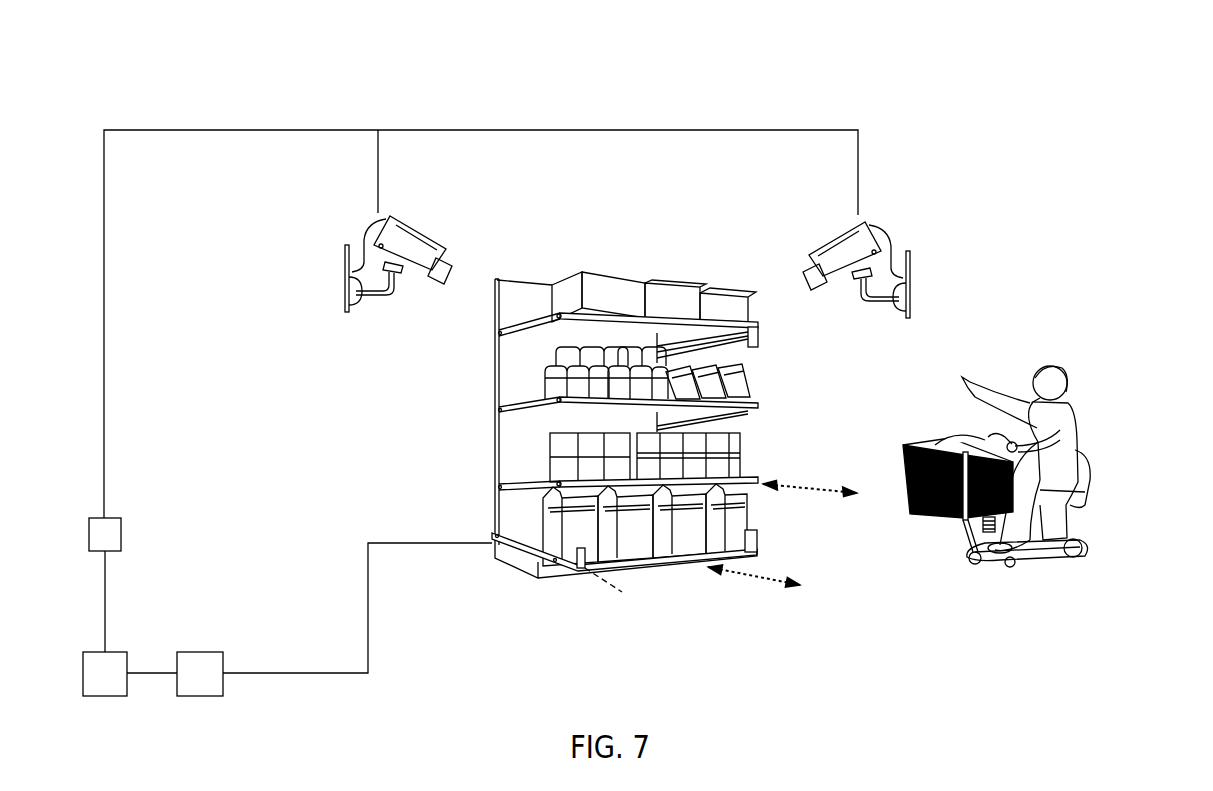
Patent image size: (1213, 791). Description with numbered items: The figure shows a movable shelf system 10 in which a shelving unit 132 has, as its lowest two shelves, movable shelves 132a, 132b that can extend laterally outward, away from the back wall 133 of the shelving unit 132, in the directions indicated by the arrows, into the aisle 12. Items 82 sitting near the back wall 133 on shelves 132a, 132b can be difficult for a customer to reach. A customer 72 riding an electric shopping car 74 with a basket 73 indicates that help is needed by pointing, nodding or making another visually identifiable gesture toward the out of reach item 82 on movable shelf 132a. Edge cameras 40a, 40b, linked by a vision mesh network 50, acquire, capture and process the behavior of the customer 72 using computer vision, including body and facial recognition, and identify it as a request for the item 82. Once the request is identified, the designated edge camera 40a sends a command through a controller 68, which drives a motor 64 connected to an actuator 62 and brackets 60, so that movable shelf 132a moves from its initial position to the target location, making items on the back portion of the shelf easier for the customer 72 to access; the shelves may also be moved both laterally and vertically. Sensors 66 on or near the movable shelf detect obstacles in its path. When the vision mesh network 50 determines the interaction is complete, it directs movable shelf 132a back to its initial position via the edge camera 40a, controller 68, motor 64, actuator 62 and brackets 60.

The movable shelf system 10 is at (828, 80).
The mesh network 50 is at (509, 130).
The edge camera 40a is at (407, 218).
The edge camera 40b is at (863, 232).
The controller 68 is at (113, 518).
The motor 64 is at (108, 696).
The actuator 62 is at (203, 696).
The shelving unit 132 is at (540, 604).
The back wall 133 is at (643, 347).
The item 82 is at (545, 515).
The aisle 12 is at (670, 593).
The brackets 60 is at (527, 557).
The sensors 66 is at (757, 542).
The movable shelf 132b is at (753, 477).
The movable shelf 132a is at (760, 555).
The customer 72 is at (1075, 415).
The basket 73 is at (930, 520).
The electric shopping car 74 is at (1100, 520).